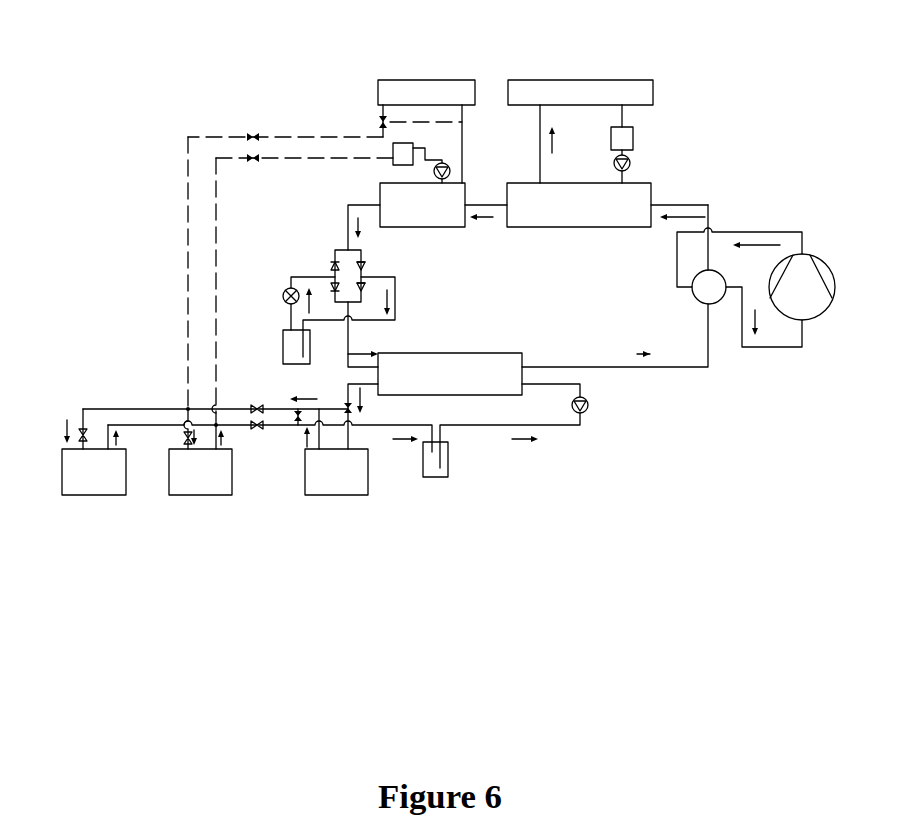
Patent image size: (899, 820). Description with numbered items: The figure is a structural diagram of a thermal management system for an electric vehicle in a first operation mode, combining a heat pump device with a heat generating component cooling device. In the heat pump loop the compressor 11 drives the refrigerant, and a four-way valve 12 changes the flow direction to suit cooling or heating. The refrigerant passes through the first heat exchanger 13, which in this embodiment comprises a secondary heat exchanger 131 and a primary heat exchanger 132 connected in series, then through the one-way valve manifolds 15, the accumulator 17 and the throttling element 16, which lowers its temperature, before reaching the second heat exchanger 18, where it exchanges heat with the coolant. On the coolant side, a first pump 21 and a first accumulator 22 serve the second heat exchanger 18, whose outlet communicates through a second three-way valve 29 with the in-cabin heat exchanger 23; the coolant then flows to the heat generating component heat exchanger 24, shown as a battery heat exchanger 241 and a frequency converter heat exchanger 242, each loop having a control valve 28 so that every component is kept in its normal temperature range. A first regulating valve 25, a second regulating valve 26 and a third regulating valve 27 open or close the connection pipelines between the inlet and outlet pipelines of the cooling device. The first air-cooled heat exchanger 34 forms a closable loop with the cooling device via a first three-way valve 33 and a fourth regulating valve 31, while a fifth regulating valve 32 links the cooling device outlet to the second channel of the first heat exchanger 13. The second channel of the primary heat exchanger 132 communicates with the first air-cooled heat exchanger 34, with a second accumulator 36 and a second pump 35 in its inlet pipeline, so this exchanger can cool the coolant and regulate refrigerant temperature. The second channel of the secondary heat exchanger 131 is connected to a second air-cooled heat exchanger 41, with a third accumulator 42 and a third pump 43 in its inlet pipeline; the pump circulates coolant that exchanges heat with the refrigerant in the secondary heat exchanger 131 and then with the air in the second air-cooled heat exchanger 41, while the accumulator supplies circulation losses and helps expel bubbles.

The compressor 11 is at (812, 270).
The four-way valve 12 is at (712, 295).
The first heat exchanger 13 is at (515, 241).
The secondary heat exchanger 131 is at (600, 222).
The primary heat exchanger 132 is at (440, 228).
The one-way valve manifolds 15 is at (363, 265).
The throttling element 16 is at (285, 290).
The accumulator 17 is at (297, 345).
The second heat exchanger 18 is at (447, 363).
The first pump 21 is at (587, 412).
The first accumulator 22 is at (445, 472).
The in-cabin heat exchanger 23 is at (355, 488).
The heat generating component heat exchanger 24 is at (181, 510).
The battery heat exchanger 241 is at (232, 491).
The frequency converter heat exchanger 242 is at (100, 490).
The first regulating valve 25 is at (255, 424).
The second regulating valve 26 is at (296, 413).
The third regulating valve 27 is at (255, 408).
The control valve 28 is at (187, 434).
The second three-way valve 29 is at (349, 411).
The fourth regulating valve 31 is at (253, 158).
The fifth regulating valve 32 is at (253, 137).
The first three-way valve 33 is at (382, 118).
The first air-cooled heat exchanger 34 is at (405, 90).
The second pump 35 is at (446, 167).
The second accumulator 36 is at (398, 155).
The second air-cooled heat exchanger 41 is at (610, 93).
The third accumulator 42 is at (625, 138).
The third pump 43 is at (628, 162).